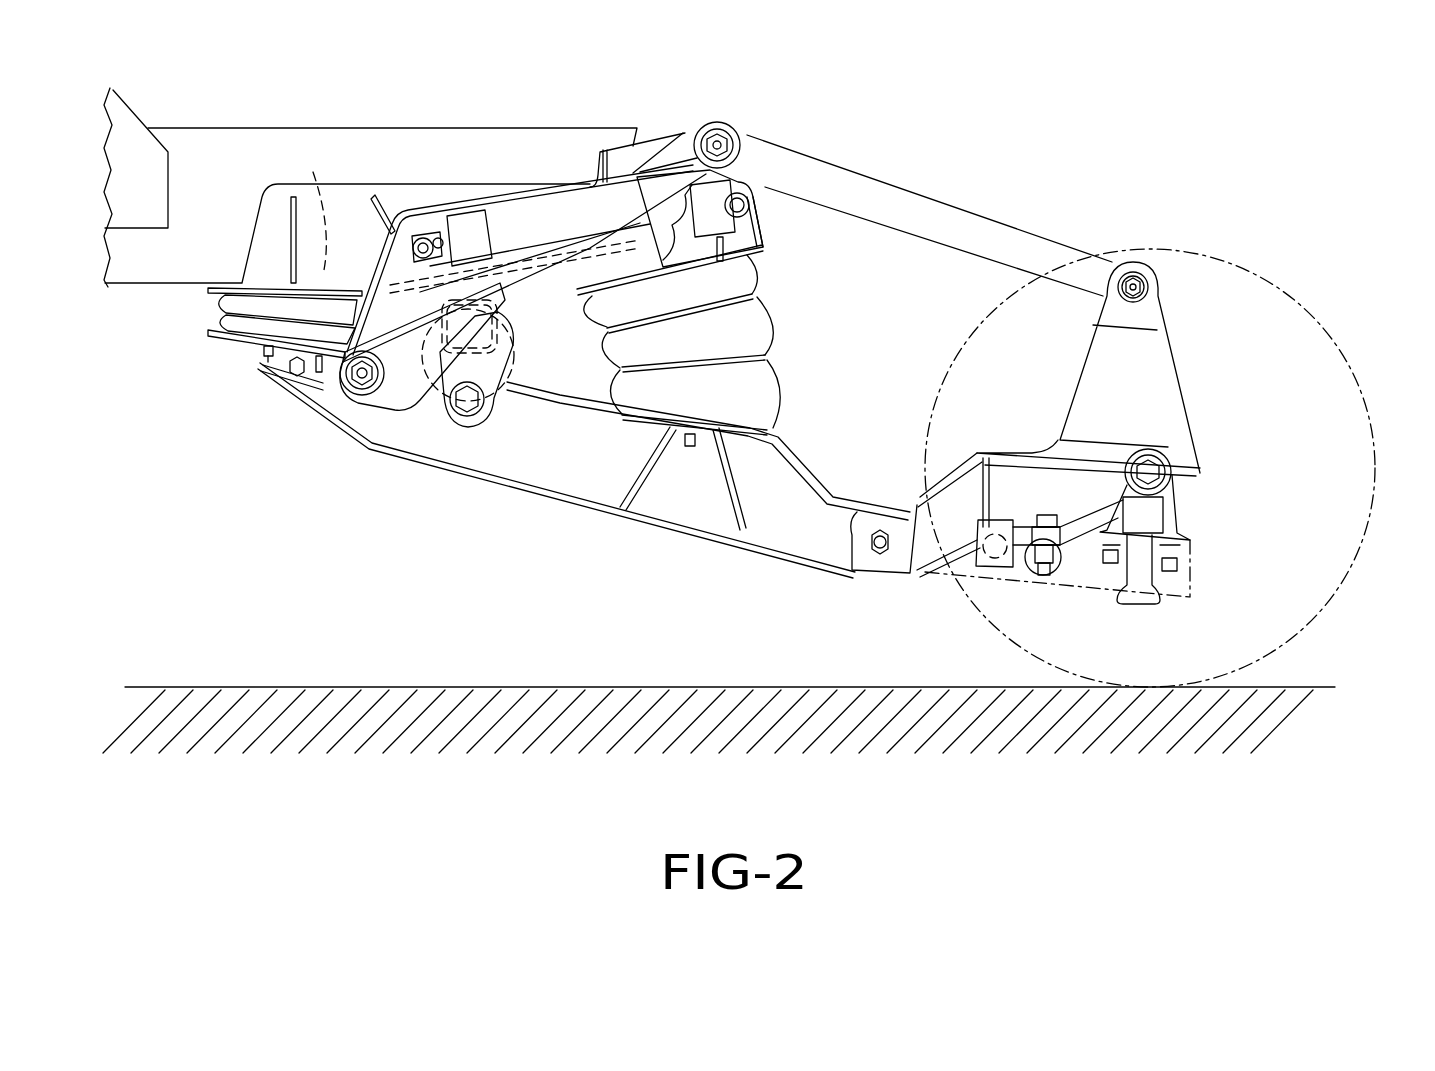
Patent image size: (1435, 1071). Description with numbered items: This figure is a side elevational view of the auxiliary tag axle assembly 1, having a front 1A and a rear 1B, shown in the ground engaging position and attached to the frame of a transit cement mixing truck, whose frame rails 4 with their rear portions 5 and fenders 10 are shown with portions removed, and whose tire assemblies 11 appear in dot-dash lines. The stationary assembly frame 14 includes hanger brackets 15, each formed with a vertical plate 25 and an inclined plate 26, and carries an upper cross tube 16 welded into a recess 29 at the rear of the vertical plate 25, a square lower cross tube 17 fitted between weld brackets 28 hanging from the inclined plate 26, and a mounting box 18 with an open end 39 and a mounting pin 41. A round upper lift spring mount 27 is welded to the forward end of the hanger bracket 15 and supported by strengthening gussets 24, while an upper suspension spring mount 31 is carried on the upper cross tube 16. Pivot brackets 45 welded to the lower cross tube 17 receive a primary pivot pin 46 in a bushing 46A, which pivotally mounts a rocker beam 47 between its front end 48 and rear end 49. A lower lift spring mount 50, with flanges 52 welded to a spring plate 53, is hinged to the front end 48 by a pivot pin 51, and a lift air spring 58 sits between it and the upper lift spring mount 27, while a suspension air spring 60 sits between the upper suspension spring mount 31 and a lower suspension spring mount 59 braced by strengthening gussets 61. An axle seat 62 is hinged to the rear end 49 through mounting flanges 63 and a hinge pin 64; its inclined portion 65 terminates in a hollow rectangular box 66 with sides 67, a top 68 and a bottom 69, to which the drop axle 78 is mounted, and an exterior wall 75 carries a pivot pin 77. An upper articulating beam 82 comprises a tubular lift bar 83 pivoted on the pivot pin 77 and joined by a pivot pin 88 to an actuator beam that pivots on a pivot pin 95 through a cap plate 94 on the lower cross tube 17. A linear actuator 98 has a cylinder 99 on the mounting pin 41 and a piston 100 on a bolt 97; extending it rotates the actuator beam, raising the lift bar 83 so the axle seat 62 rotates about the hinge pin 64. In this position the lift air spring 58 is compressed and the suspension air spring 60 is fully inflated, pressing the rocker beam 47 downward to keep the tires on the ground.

The auxiliary tag axle assembly 1 is at (936, 134).
The front 1A is at (194, 356).
The rear 1B is at (1208, 512).
The frame rails 4 is at (220, 148).
The rear portions 5 is at (618, 140).
The fenders 10 is at (130, 135).
The tire assemblies 11 is at (1320, 613).
The assembly frame 14 is at (283, 184).
The hanger brackets 15 is at (335, 203).
The upper cross tube 16 is at (745, 186).
The lower cross tube 17 is at (421, 410).
The mounting boxes 18 is at (760, 238).
The strengthening gussets 24 is at (390, 205).
The vertical plate 25 is at (270, 250).
The inclined plate 26 is at (313, 209).
The upper lift spring mount 27 is at (218, 293).
The weld brackets 28 is at (508, 287).
The recess 29 is at (707, 160).
The upper suspension spring mount 31 is at (603, 277).
The open end 39 is at (645, 150).
The mounting pin 41 is at (750, 207).
The pivot brackets 45 is at (490, 387).
The primary pivot pin 46 is at (467, 405).
The bushing 46A is at (470, 405).
The rocker beam 47 is at (573, 470).
The front end 48 is at (322, 395).
The rear end 49 is at (840, 515).
The lower lift spring mount 50 is at (256, 358).
The pivot pin 51 is at (323, 393).
The flanges 52 is at (297, 377).
The spring plate 53 is at (220, 335).
The lift air spring 58 is at (228, 320).
The lower suspension spring mount 59 is at (750, 428).
The suspension air spring 60 is at (758, 329).
The strengthening gussets 61 is at (640, 487).
The axle seat 62 is at (1208, 476).
The mounting flanges 63 is at (897, 560).
The hinge pin 64 is at (880, 550).
The inclined portion 65 is at (958, 465).
The hollow rectangular box 66 is at (1005, 473).
The sides 67 is at (1187, 512).
The top 68 is at (1028, 455).
The bottom 69 is at (1187, 547).
The exterior wall 75 is at (1155, 373).
The pivot pin 77 is at (1137, 288).
The drop axle 78 is at (1137, 592).
The upper articulating beam 82 is at (932, 197).
The tubular lift bar 83 is at (1025, 240).
The pivot pin 88 is at (722, 146).
The cap plate 94 is at (395, 372).
The pivot pin 95 is at (362, 378).
The bolt 97 is at (418, 249).
The linear actuator 98 is at (472, 216).
The cylinder 99 is at (590, 182).
The piston 100 is at (438, 240).